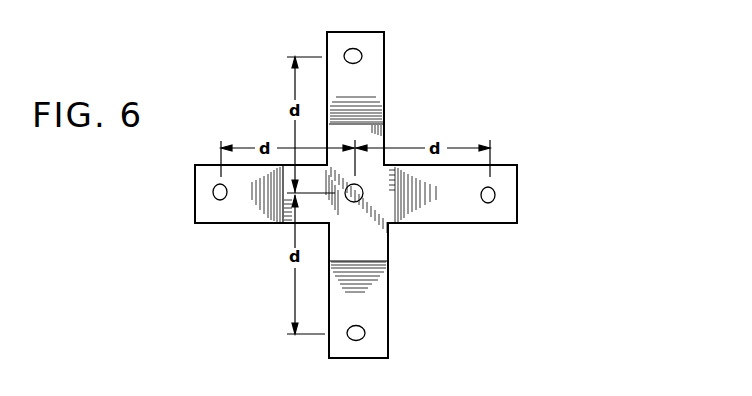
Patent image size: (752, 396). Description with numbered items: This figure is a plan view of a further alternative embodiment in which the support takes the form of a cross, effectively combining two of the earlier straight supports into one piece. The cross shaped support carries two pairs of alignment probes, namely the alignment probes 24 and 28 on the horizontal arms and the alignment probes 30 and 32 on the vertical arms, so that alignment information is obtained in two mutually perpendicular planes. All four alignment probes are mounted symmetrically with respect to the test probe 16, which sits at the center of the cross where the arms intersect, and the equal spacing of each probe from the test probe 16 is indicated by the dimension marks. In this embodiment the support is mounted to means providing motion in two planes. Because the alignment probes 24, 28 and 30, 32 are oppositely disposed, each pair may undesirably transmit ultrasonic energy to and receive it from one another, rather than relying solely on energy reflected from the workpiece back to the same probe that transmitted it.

The test probe 16 is at (362, 198).
The alignment probe 24 is at (216, 199).
The alignment probe 28 is at (496, 197).
The alignment probe 30 is at (362, 56).
The alignment probe 32 is at (365, 333).